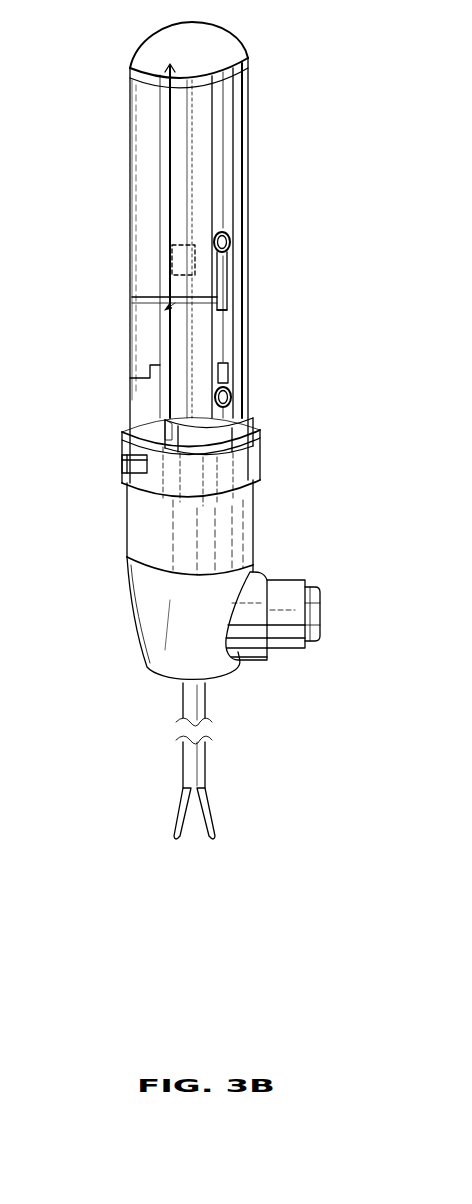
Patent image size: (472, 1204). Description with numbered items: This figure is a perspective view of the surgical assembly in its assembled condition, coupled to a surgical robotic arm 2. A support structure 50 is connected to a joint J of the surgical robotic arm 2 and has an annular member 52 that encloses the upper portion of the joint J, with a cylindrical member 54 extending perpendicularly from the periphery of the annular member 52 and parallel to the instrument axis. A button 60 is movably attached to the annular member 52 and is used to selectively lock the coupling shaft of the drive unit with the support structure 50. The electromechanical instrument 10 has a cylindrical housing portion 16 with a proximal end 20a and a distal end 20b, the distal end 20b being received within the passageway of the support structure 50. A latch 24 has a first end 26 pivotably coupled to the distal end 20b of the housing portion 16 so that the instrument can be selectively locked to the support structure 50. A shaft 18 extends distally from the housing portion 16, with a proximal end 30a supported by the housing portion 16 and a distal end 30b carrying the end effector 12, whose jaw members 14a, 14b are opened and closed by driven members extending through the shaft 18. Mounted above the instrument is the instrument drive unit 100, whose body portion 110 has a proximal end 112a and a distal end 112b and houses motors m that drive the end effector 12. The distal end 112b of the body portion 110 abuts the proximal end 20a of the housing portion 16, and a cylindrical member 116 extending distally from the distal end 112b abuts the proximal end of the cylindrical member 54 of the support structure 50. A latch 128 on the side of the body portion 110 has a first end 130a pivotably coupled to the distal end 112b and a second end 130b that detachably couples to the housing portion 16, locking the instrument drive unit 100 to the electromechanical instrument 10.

The electromechanical instrument 10 is at (190, 444).
The instrument drive unit 100 is at (187, 247).
The body portion 110 is at (128, 133).
The proximal end 112a is at (250, 55).
The distal end 112b is at (136, 262).
The member 116 is at (138, 318).
The motor m is at (182, 245).
The first end 130a is at (226, 233).
The latch 128 is at (229, 275).
The second end 130b is at (229, 308).
The proximal end 20a is at (170, 297).
The housing portion 16 is at (187, 357).
The cylindrical member 54 is at (137, 390).
The first end 26 is at (233, 386).
The latch 24 is at (253, 420).
The distal end 20b is at (183, 420).
The support structure 50 is at (263, 453).
The button 60 is at (124, 464).
The annular member 52 is at (163, 473).
The surgical robotic arm 2 is at (137, 652).
The joint J is at (252, 572).
The shaft 18 is at (209, 729).
The proximal end 30a is at (183, 689).
The distal end 30b is at (206, 780).
The jaw member 14a is at (176, 818).
The jaw member 14b is at (209, 806).
The end effector 12 is at (208, 774).